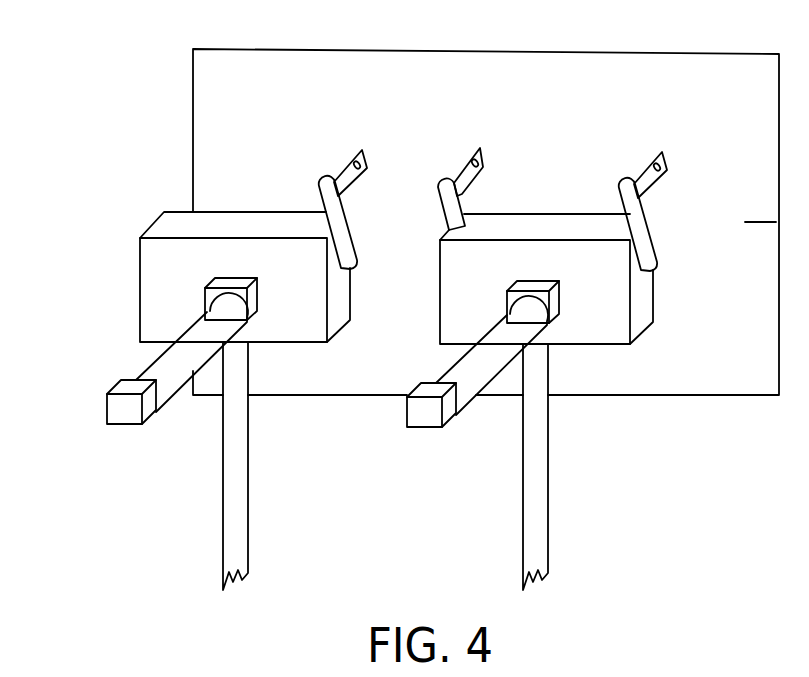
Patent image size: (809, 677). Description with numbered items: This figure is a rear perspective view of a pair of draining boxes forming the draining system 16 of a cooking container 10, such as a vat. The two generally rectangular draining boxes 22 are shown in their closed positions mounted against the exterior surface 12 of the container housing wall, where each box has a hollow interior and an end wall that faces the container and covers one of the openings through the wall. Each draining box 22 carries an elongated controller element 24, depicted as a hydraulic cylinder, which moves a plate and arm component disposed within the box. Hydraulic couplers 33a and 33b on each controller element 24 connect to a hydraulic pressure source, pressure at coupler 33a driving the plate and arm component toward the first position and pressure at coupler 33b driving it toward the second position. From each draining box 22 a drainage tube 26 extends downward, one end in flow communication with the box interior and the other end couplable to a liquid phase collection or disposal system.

The cooking container 10 is at (637, 72).
The exterior surface 12 is at (760, 209).
The draining system 16 is at (95, 212).
The draining box 22 is at (150, 295).
The controller element 24 is at (149, 369).
The drainage tube 26 is at (523, 488).
The hydraulic coupler 33a is at (213, 312).
The hydraulic coupler 33b is at (158, 369).